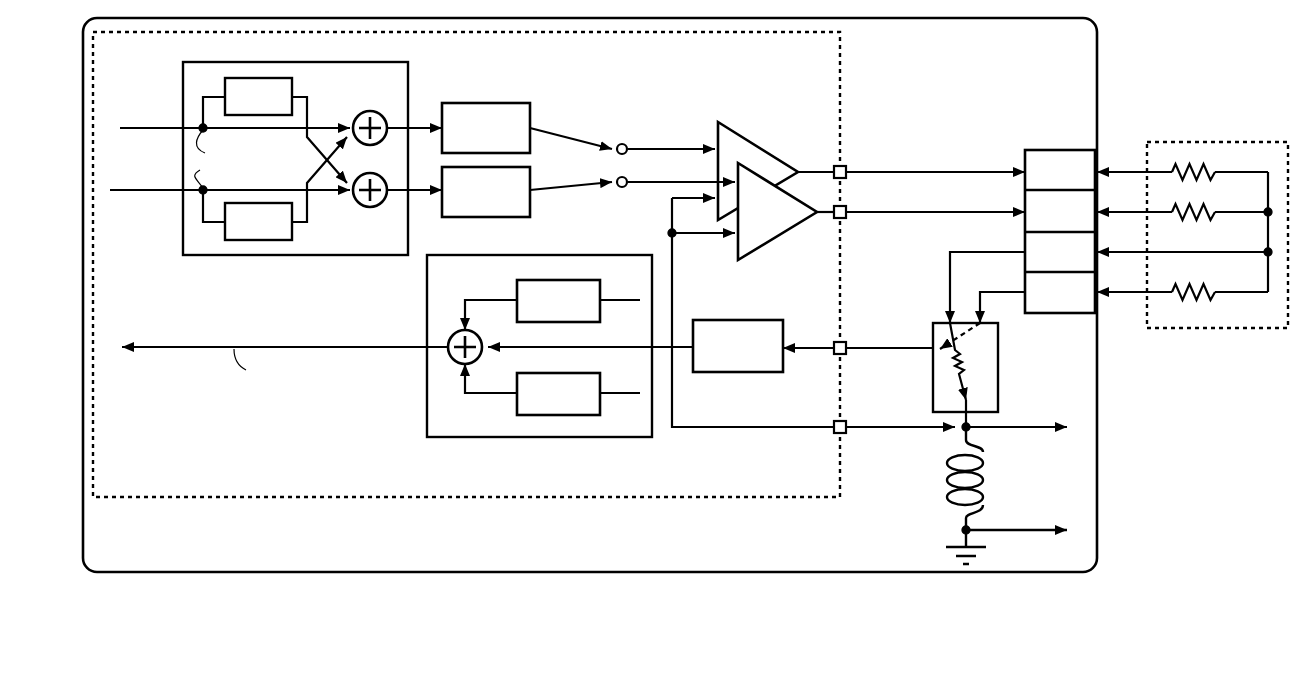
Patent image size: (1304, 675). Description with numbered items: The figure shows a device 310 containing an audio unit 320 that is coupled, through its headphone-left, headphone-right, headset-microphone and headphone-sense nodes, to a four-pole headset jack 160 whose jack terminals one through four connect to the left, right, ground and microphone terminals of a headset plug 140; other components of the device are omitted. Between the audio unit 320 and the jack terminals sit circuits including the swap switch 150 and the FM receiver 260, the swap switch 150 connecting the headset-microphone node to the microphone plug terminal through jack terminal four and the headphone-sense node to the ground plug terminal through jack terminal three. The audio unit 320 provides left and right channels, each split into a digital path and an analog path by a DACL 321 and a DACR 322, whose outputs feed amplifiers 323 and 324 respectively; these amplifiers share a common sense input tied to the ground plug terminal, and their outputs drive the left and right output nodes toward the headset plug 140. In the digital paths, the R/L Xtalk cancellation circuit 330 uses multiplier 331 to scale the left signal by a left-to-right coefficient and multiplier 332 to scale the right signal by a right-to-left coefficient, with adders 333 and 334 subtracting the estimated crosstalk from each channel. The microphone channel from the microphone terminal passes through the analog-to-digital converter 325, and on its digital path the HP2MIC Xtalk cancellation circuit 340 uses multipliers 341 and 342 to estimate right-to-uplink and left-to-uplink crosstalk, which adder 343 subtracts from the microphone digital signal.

The device 310 is at (685, 325).
The audio unit 320 is at (594, 298).
The R/L Xtalk cancellation circuit 330 is at (295, 172).
The multiplier 331 is at (264, 92).
The multiplier 332 is at (290, 228).
The adder 333 is at (381, 114).
The adder 334 is at (381, 205).
The DACL 321 is at (518, 118).
The DACR 322 is at (520, 187).
The amplifier 323 is at (738, 153).
The amplifier 324 is at (775, 222).
The ADC 325 is at (728, 330).
The HP2MIC Xtalk cancellation circuit 340 is at (548, 351).
The multiplier 341 is at (556, 292).
The multiplier 342 is at (520, 410).
The adder 343 is at (450, 353).
The headset jack 160 is at (1055, 208).
The headset plug 140 is at (1192, 208).
The swap switch 150 is at (989, 339).
The FM receiver 260 is at (991, 495).